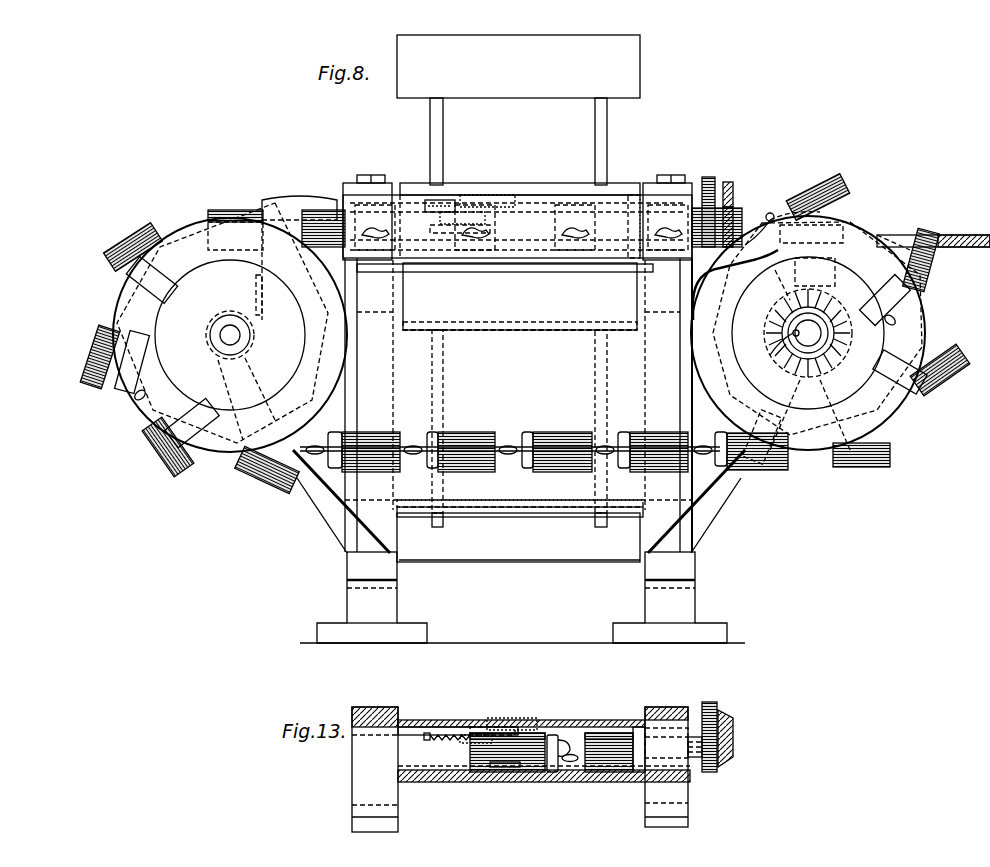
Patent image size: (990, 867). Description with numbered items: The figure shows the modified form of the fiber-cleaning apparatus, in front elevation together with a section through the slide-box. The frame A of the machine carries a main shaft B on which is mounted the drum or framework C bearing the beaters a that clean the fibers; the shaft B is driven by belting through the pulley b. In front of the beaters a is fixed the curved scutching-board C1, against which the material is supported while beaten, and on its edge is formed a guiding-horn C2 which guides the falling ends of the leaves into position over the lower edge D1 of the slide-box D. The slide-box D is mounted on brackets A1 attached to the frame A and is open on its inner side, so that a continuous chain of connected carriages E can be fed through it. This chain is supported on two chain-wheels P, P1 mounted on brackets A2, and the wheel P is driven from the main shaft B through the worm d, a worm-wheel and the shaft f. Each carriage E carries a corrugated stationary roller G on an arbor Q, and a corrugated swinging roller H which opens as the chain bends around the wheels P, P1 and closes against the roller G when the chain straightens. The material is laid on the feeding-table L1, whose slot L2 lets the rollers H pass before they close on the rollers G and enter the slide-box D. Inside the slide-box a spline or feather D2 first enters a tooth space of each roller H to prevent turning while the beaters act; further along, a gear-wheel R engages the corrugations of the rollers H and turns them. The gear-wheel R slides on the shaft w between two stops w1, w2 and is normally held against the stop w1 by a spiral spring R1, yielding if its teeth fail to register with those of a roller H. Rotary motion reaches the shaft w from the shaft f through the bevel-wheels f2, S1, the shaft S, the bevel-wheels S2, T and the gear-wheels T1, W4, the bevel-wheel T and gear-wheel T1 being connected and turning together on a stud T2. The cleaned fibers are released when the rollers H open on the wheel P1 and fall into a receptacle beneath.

In FIG. 8, the beaters a is at (575, 186).
In FIG. 8, the frame A is at (522, 597).
In FIG. 8, the brackets A1 is at (365, 184).
In FIG. 13, the brackets A1 is at (388, 700).
In FIG. 8, the brackets A2 is at (322, 508).
In FIG. 8, the pulley b is at (297, 199).
In FIG. 8, the main shaft B is at (256, 291).
In FIG. 8, the drum or framework C is at (430, 128).
In FIG. 8, the scutching-board C1 is at (518, 405).
In FIG. 8, the guiding-horn C2 is at (724, 272).
In FIG. 8, the slide-box D is at (513, 272).
In FIG. 13, the slide-box D is at (495, 783).
In FIG. 13, the lower edge D1 is at (448, 772).
In FIG. 8, the spline or feather D2 is at (632, 195).
In FIG. 13, the spline or feather D2 is at (632, 727).
In FIG. 8, the worm d is at (830, 290).
In FIG. 8, the carriages E is at (545, 440).
In FIG. 13, the carriages E is at (552, 775).
In FIG. 8, the shaft f is at (772, 353).
In FIG. 8, the bevel-wheel f2 is at (836, 333).
In FIG. 8, the stationary rollers G is at (385, 432).
In FIG. 13, the stationary rollers G is at (515, 775).
In FIG. 8, the swinging rollers H is at (368, 470).
In FIG. 13, the swinging rollers H is at (553, 733).
In FIG. 8, the feeding-table L1 is at (958, 235).
In FIG. 8, the slot or aperture L2 is at (890, 236).
In FIG. 8, the chain-wheel P is at (808, 333).
In FIG. 8, the chain-wheel P1 is at (230, 327).
In FIG. 8, the arbor Q is at (316, 445).
In FIG. 13, the arbor Q is at (570, 764).
In FIG. 8, the gear-wheel R is at (488, 195).
In FIG. 13, the gear-wheel R is at (500, 718).
In FIG. 8, the spiral spring R1 is at (455, 212).
In FIG. 13, the spiral spring R1 is at (462, 720).
In FIG. 8, the shaft S is at (795, 215).
In FIG. 8, the bevel-wheel S1 is at (774, 300).
In FIG. 8, the bevel-wheel S2 is at (760, 218).
In FIG. 8, the bevel-wheel T is at (733, 208).
In FIG. 13, the bevel-wheel T is at (733, 720).
In FIG. 8, the gear-wheel T1 is at (728, 182).
In FIG. 13, the gear-wheel T1 is at (730, 710).
In FIG. 13, the stud T2 is at (693, 770).
In FIG. 8, the gear-wheel W4 is at (708, 178).
In FIG. 13, the gear-wheel W4 is at (712, 700).
In FIG. 13, the shaft w is at (424, 722).
In FIG. 8, the stop w1 is at (520, 225).
In FIG. 13, the stop w1 is at (525, 727).
In FIG. 8, the stop w2 is at (428, 200).
In FIG. 13, the stop w2 is at (445, 741).